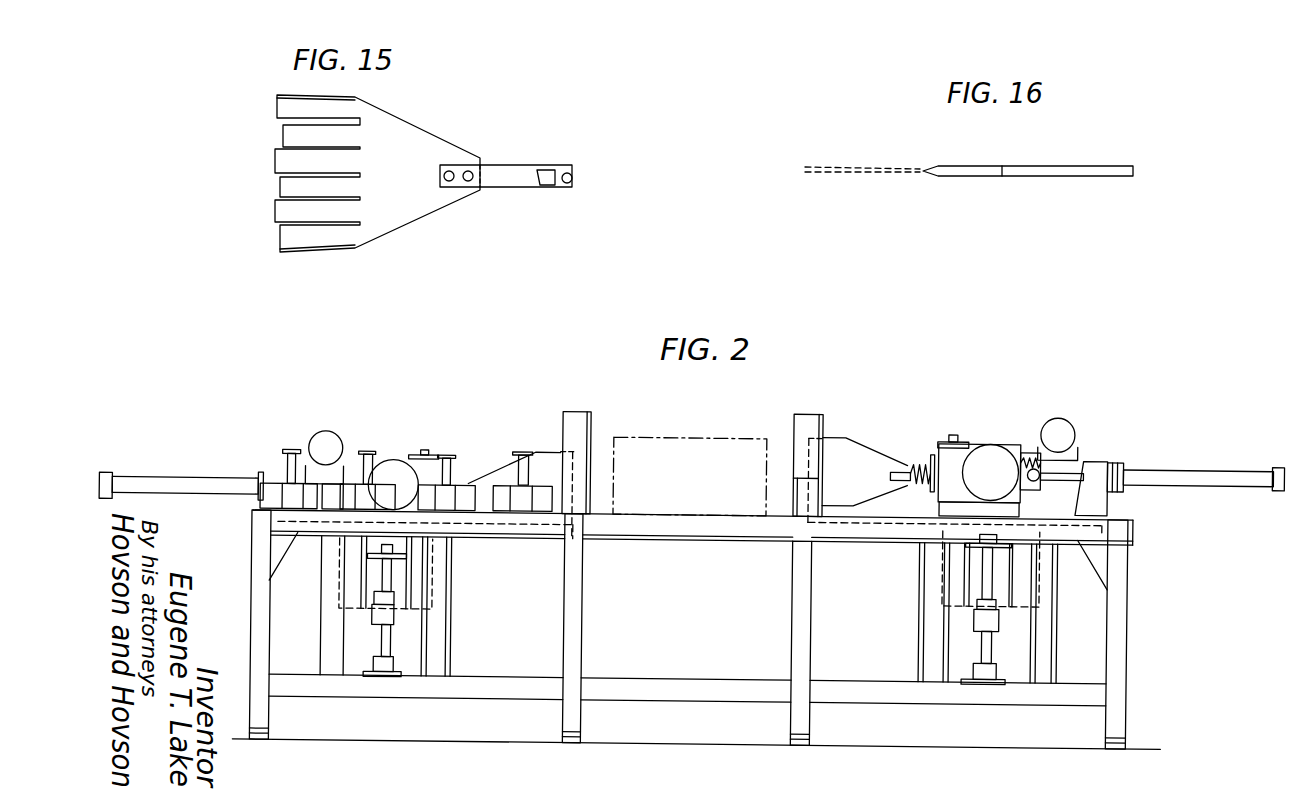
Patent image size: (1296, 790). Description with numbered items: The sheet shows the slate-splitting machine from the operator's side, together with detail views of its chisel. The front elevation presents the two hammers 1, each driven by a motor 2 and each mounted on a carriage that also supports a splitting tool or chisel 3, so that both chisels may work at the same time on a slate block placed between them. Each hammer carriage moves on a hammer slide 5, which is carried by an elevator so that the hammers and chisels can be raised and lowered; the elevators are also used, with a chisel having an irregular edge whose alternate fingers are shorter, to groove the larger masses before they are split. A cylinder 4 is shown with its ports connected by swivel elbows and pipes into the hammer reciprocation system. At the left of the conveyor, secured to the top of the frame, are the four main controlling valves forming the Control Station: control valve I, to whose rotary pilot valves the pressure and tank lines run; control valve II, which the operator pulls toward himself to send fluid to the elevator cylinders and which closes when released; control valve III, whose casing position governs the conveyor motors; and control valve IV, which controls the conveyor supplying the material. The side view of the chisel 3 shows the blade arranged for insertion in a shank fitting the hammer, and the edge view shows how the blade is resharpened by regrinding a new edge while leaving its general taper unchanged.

In FIG. 2, the hammer 1 is at (395, 457).
In FIG. 2, the motor 2 is at (322, 431).
In FIG. 15, the splitting tool or chisel 3 is at (386, 243).
In FIG. 16, the splitting tool or chisel 3 is at (1021, 183).
In FIG. 2, the splitting tool or chisel 3 is at (543, 445).
In FIG. 2, the cylinder 4 is at (185, 477).
In FIG. 2, the hammer slide 5 is at (277, 515).
In FIG. 2, the control valve I is at (517, 449).
In FIG. 2, the control valve II is at (442, 452).
In FIG. 2, the control valve III is at (365, 449).
In FIG. 2, the control valve IV is at (290, 448).